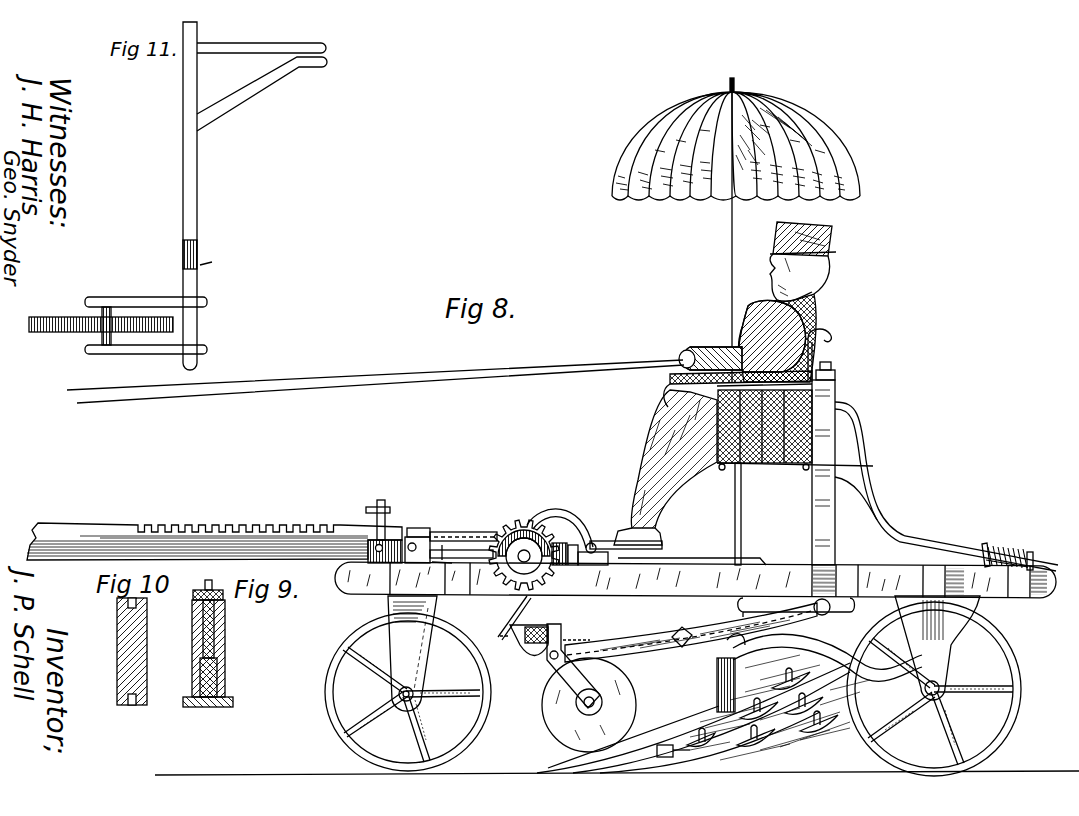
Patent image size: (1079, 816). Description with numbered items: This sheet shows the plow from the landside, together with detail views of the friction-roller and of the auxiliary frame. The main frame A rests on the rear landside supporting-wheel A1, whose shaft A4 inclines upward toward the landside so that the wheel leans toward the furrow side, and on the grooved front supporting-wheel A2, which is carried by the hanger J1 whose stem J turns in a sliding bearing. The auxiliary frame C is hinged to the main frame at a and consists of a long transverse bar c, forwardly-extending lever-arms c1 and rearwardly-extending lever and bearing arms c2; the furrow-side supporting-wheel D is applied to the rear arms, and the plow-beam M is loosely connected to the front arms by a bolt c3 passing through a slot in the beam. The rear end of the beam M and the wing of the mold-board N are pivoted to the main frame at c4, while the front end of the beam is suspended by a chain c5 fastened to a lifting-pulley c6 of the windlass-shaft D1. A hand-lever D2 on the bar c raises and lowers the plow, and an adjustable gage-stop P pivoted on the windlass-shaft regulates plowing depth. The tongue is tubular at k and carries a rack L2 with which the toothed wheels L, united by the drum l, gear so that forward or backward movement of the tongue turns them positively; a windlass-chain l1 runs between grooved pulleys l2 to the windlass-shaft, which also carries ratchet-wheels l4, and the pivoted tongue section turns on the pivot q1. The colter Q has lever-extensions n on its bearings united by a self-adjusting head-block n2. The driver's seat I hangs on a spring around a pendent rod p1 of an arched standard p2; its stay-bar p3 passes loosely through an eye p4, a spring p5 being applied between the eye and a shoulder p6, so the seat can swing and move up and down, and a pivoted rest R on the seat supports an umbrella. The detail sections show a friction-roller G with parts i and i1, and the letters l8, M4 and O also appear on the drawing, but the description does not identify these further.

In FIG. 8, the main frame A is at (695, 580).
In FIG. 8, the rear landside supporting-wheel A1 is at (1000, 648).
In FIG. 8, the front supporting-wheel A2 is at (408, 692).
In FIG. 8, the shaft of rear supporting-wheel A4 is at (945, 700).
In FIG. 11, the auxiliary frame C is at (199, 196).
In FIG. 8, the auxiliary frame C is at (796, 607).
In FIG. 11, the transverse bar c is at (190, 225).
In FIG. 8, the transverse bar c is at (666, 579).
In FIG. 11, the forwardly-extending lever-arms c1 is at (262, 77).
In FIG. 8, the forwardly-extending lever-arms c1 is at (691, 632).
In FIG. 11, the rearwardly-extending lever and bearing arms c2 is at (146, 328).
In FIG. 8, the bolt c3 is at (700, 655).
In FIG. 8, the pivot c4 is at (935, 670).
In FIG. 8, the chain c5 is at (514, 618).
In FIG. 8, the lifting-pulley c6 is at (524, 543).
In FIG. 11, the furrow-side supporting-wheel D is at (101, 336).
In FIG. 8, the windlass-shaft D1 is at (580, 505).
In FIG. 8, the hand-lever D2 is at (750, 514).
In FIG. 10, the cylinder / bearing G is at (139, 651).
In FIG. 9, the cylinder / bearing G is at (211, 643).
In FIG. 8, the cylinder / bearing G is at (641, 713).
In FIG. 8, the driver's seat I is at (795, 399).
In FIG. 9, the inner core i is at (225, 616).
In FIG. 9, the lower core i1 is at (225, 660).
In FIG. 8, the stem of supporting-hanger J is at (778, 707).
In FIG. 8, the supporting-hanger J1 is at (412, 653).
In FIG. 8, the tubular part of tongue k is at (385, 551).
In FIG. 8, the wheels L is at (254, 550).
In FIG. 8, the rack L2 is at (214, 529).
In FIG. 8, the drum l is at (442, 555).
In FIG. 8, the windlass-chain l1 is at (470, 532).
In FIG. 8, the grooved horizontal pulleys l2 is at (405, 528).
In FIG. 8, the ratchet-wheel l4 is at (530, 520).
In FIG. 8, the foot board l8 is at (600, 535).
In FIG. 8, the plow-beam M is at (691, 632).
In FIG. 8, the bracket M4 is at (354, 600).
In FIG. 8, the mold-board N is at (693, 718).
In FIG. 8, the lever-extensions n is at (581, 666).
In FIG. 8, the head-block n2 is at (545, 633).
In FIG. 8, the curved bar O is at (824, 658).
In FIG. 8, the gage-stop P is at (565, 546).
In FIG. 8, the pendent rod p1 is at (836, 372).
In FIG. 8, the arched standard p2 is at (821, 472).
In FIG. 8, the stay-bar p3 is at (946, 486).
In FIG. 8, the eye p4 is at (1040, 556).
In FIG. 8, the spring p5 is at (1007, 549).
In FIG. 8, the shoulder p6 is at (985, 544).
In FIG. 8, the colter Q is at (601, 705).
In FIG. 8, the pivot of tongue q1 is at (440, 532).
In FIG. 8, the rest or arm R is at (668, 368).
In FIG. 11, the pivot a is at (209, 265).
In FIG. 8, the pivot a is at (831, 610).